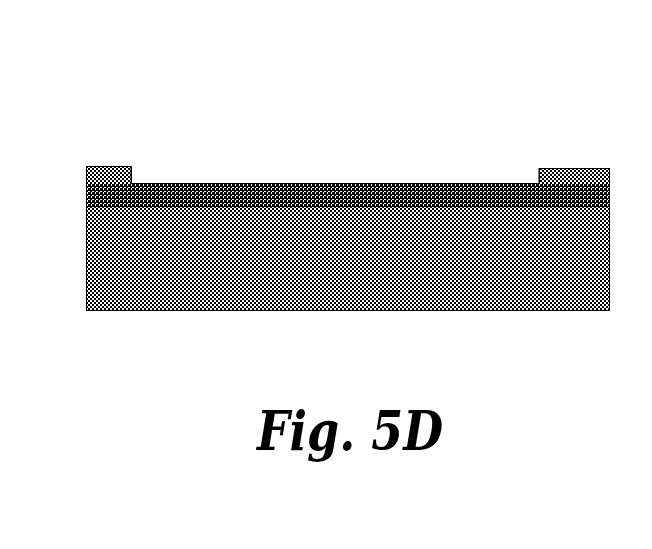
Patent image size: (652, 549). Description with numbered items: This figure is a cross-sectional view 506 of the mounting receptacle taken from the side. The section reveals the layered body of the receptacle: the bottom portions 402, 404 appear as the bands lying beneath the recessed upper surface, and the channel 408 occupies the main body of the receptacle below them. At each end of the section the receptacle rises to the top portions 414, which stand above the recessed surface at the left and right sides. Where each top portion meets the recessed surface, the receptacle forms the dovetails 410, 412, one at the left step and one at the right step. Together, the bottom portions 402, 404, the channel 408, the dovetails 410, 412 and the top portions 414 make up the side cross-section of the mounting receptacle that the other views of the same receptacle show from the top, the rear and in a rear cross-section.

The cross-sectional view 506 is at (155, 90).
The channel 408 is at (120, 200).
The bottom portion 404 is at (315, 183).
The bottom portion 402 is at (352, 197).
The top portions 414 is at (115, 165).
The dovetail 410 is at (135, 174).
The dovetail 412 is at (538, 174).